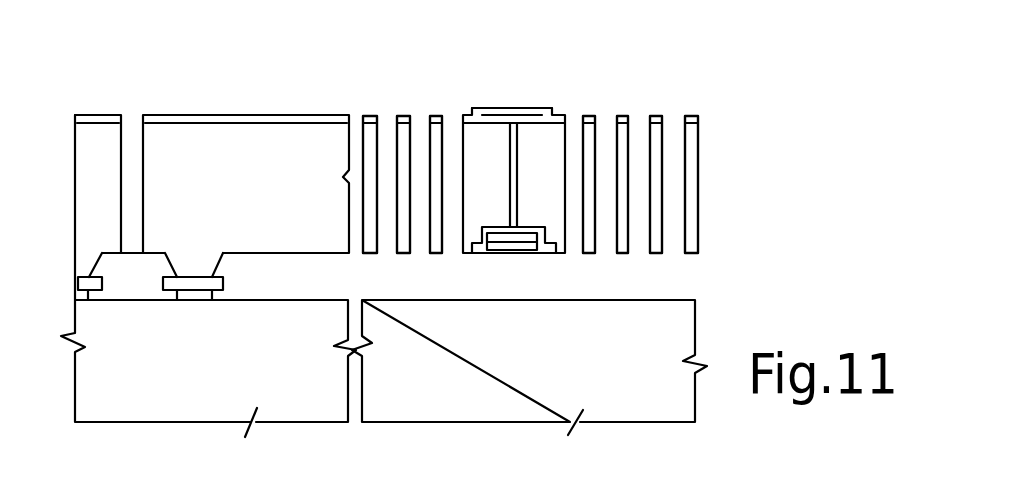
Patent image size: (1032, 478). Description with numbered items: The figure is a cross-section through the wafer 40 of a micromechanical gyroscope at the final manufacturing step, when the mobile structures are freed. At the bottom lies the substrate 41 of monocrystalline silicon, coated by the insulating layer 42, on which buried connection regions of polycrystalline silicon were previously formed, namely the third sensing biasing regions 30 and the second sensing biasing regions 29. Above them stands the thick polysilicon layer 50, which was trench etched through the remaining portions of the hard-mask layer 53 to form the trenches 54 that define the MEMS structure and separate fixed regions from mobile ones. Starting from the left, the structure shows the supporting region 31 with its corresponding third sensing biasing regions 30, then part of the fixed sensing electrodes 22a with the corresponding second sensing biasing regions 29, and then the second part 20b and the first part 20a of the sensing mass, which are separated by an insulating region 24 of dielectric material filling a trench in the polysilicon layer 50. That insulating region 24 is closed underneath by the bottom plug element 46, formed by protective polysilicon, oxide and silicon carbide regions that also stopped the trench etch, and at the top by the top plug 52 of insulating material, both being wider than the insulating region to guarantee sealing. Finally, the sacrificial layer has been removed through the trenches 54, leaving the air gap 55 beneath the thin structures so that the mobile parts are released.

The supporting region 31 is at (113, 189).
The fixed sensing electrode 22a is at (298, 188).
The hard-mask layer 53 is at (220, 115).
The trenches 54 is at (132, 124).
The insulating layer 42 is at (170, 294).
The third sensing biasing regions 30 is at (78, 282).
The second sensing biasing regions 29 is at (225, 283).
The insulating region 24 is at (468, 108).
The top plug 52 is at (532, 117).
The bottom plug element 46 is at (509, 252).
The first part of the sensing mass 20a is at (688, 165).
The second part of the sensing mass 20b is at (478, 203).
The polysilicon layer 50 is at (705, 168).
The wafer 40 is at (781, 136).
The air gap 55 is at (642, 290).
The substrate 41 is at (664, 400).